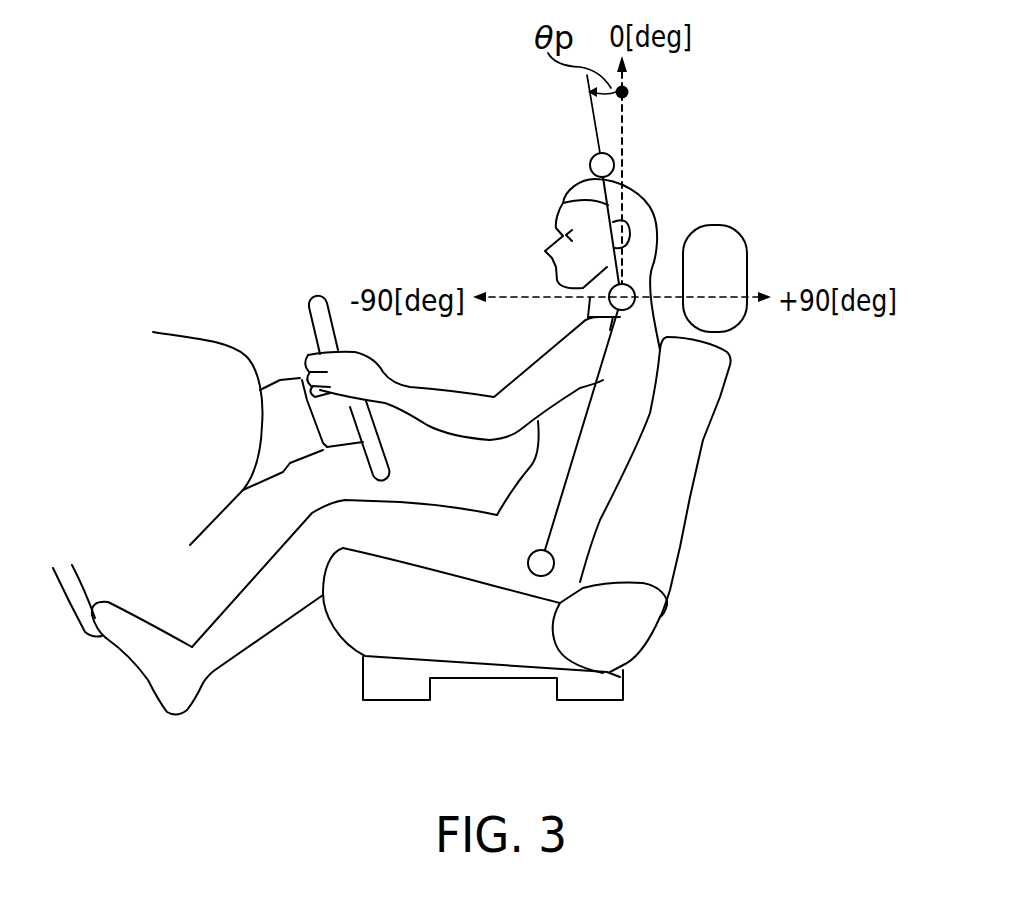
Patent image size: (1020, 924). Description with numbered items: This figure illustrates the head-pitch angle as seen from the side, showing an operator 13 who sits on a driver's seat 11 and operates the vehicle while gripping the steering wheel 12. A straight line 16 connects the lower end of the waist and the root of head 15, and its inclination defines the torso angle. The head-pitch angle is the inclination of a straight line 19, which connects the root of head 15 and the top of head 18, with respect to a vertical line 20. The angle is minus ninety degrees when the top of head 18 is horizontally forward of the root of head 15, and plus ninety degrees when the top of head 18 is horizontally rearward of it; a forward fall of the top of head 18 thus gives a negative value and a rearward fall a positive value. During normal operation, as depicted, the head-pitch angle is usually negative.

The driver's seat 11 is at (720, 400).
The steering wheel 12 is at (313, 298).
The operator 13 is at (512, 372).
The root of head 15 is at (631, 289).
The straight line 16 is at (571, 470).
The top of head 18 is at (590, 163).
The straight line 19 is at (557, 202).
The vertical line 20 is at (624, 128).